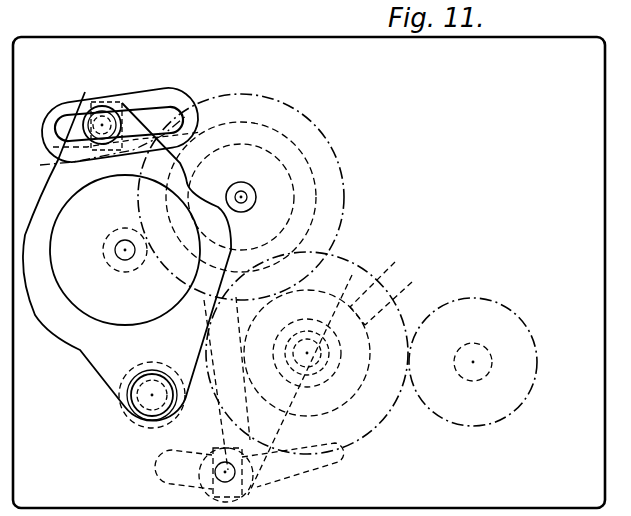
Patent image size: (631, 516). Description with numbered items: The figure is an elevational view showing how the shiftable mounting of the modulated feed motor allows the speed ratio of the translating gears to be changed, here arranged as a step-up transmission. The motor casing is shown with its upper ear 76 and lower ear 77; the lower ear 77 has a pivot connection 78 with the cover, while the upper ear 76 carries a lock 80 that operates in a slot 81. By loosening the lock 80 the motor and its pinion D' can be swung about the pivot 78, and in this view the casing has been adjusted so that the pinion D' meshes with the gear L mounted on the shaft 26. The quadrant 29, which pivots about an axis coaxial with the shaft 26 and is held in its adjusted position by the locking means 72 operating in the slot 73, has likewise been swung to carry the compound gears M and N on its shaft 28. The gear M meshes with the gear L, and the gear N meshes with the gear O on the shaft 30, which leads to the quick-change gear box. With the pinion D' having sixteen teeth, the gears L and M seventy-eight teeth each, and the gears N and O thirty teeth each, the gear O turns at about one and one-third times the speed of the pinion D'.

The shaft 26 is at (256, 196).
The shaft 28 is at (311, 375).
The quadrant 29 is at (356, 443).
The shaft 30 is at (491, 350).
The locking means 72 is at (258, 490).
The slot 73 is at (340, 470).
The upper ear 76 is at (58, 157).
The lower ear 77 is at (93, 366).
The pivot connection 78 is at (150, 395).
The lock 80 is at (143, 112).
The slot 81 is at (92, 112).
The gear L is at (313, 116).
The compound gear M is at (365, 264).
The compound gear N is at (430, 293).
The gear O is at (500, 309).
The pinion D' is at (125, 250).